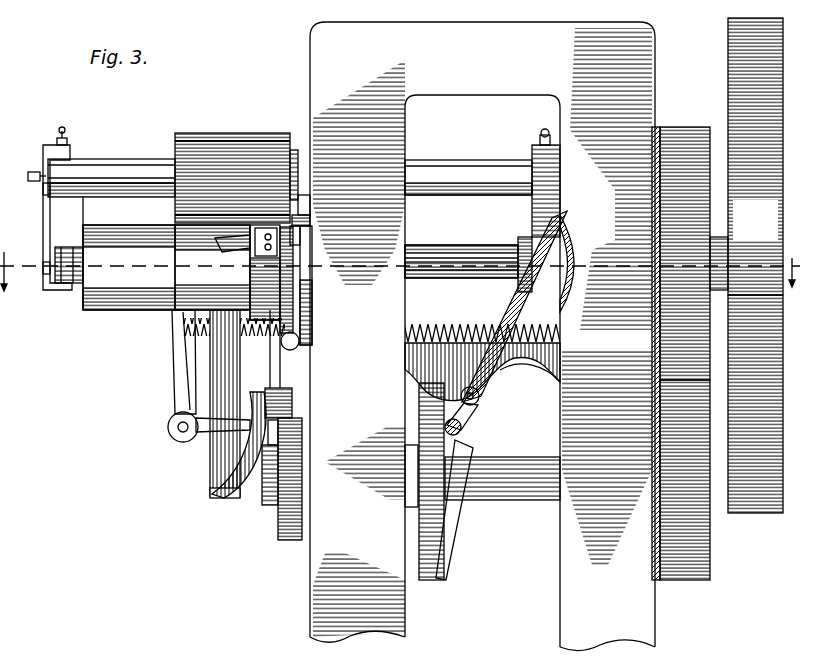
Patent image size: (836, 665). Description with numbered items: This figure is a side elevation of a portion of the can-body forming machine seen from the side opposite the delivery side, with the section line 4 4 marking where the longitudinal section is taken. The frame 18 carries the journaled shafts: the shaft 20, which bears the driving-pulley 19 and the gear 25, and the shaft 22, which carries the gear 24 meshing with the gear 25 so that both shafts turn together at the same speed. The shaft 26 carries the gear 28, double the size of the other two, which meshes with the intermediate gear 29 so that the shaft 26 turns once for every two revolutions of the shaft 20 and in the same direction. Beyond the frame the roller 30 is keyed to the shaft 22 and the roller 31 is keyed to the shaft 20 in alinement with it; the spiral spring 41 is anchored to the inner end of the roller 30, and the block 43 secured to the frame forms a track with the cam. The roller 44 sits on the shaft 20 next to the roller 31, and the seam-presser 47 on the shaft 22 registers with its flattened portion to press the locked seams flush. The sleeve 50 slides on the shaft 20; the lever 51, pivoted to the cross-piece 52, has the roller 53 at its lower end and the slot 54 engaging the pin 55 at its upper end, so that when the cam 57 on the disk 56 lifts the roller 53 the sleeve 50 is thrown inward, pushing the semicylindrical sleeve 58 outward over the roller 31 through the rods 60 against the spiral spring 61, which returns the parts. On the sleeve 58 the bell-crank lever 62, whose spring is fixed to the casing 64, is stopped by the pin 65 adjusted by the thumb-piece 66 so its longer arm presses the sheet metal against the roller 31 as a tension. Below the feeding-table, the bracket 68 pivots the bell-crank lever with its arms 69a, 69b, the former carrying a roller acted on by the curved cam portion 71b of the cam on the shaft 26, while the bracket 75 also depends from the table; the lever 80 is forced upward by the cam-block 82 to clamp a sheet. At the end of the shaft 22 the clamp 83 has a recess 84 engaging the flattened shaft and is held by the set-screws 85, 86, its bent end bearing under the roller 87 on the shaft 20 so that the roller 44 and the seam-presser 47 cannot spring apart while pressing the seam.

The section line 4 4 is at (400, 265).
The frame 18 is at (568, 512).
The driving-pulley 19 is at (755, 156).
The shaft 20 is at (73, 284).
The shaft 22 is at (110, 160).
The gear 24 is at (700, 177).
The gear 25 is at (724, 258).
The shaft 26 is at (500, 466).
The gear 28 is at (711, 548).
The intermediate gear 29 is at (729, 330).
The roller 30 is at (236, 140).
The roller 31 is at (212, 267).
The spiral spring 41 is at (300, 170).
The block 43 is at (306, 210).
The roller 44 is at (120, 285).
The seam-presser 47 is at (90, 217).
The sleeve 50 is at (545, 232).
The lever 51 is at (497, 372).
The cross-piece 52 is at (512, 392).
The roller 53 is at (462, 428).
The slot 54 is at (562, 260).
The pin 55 is at (560, 232).
The disk 56 is at (440, 580).
The cam 57 is at (466, 498).
The semicylindrical sleeve 58 is at (271, 279).
The rods 60 is at (467, 267).
The spiral spring 61 is at (455, 330).
The bell-crank lever 62 is at (228, 243).
The casing 64 is at (312, 250).
The pin 65 is at (322, 240).
The thumb-piece 66 is at (312, 222).
The bracket 68 is at (258, 375).
The arm 69a is at (240, 455).
The arm 69b is at (212, 400).
The curved cam portion 71b is at (284, 522).
The bracket 75 is at (180, 390).
The lever 80 is at (297, 350).
The cam-block 82 is at (270, 466).
The clamp 83 is at (47, 268).
The recess 84 is at (48, 190).
The set-screw 85 is at (33, 172).
The set-screw 86 is at (64, 146).
The roller 87 is at (63, 284).